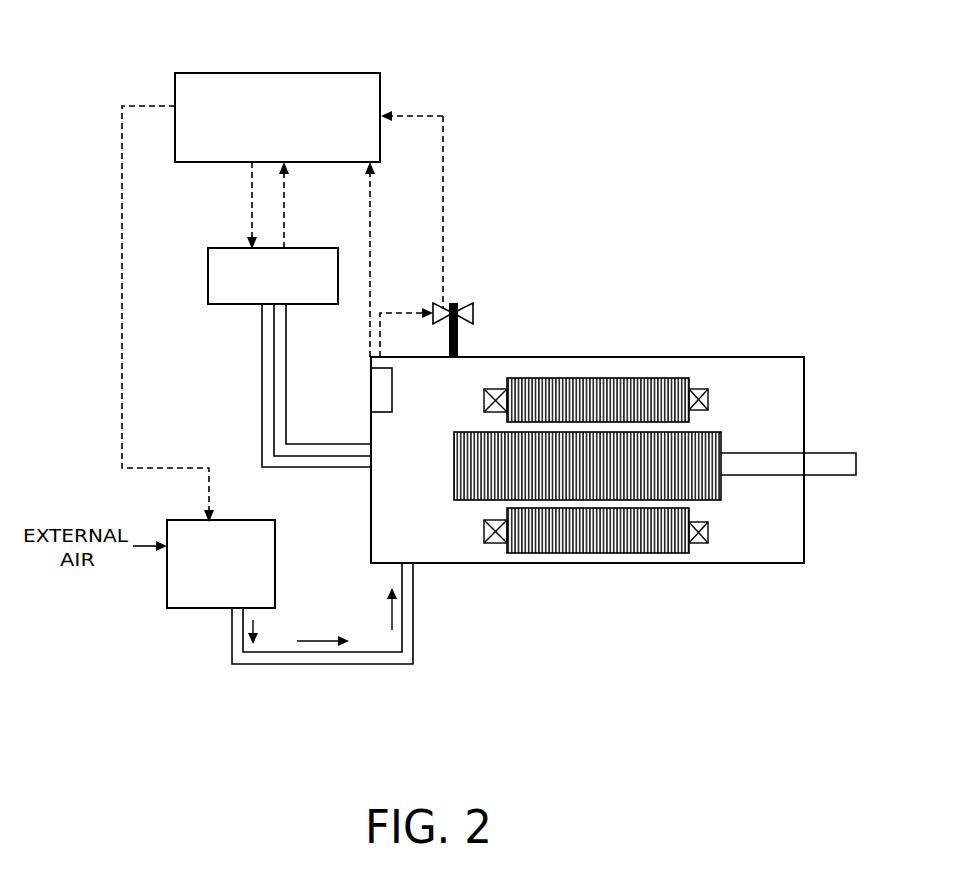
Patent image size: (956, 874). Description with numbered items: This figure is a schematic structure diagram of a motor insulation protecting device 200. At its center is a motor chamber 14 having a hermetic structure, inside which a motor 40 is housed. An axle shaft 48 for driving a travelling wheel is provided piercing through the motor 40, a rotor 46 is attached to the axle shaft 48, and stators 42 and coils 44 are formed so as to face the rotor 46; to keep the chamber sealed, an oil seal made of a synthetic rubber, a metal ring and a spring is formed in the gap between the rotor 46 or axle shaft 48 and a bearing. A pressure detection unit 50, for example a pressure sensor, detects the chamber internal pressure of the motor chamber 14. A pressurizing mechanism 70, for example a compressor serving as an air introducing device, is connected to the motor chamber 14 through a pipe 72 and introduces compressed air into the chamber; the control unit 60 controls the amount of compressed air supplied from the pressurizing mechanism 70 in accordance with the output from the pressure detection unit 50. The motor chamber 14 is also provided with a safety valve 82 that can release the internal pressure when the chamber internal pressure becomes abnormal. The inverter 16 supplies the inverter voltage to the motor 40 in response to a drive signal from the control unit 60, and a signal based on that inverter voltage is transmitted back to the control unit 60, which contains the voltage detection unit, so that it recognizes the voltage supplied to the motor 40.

The motor insulation protecting device 200 is at (741, 108).
The control unit 60 is at (272, 73).
The inverter 16 is at (218, 248).
The safety valve 82 is at (470, 305).
The motor chamber 14 is at (560, 357).
The pressure detection unit 50 is at (371, 372).
The motor 40 is at (720, 410).
The stators 42 is at (655, 378).
The coils 44 is at (484, 400).
The rotor 46 is at (454, 457).
The axle shaft 48 is at (838, 477).
The pressurizing mechanism 70 is at (200, 608).
The pipe 72 is at (413, 612).